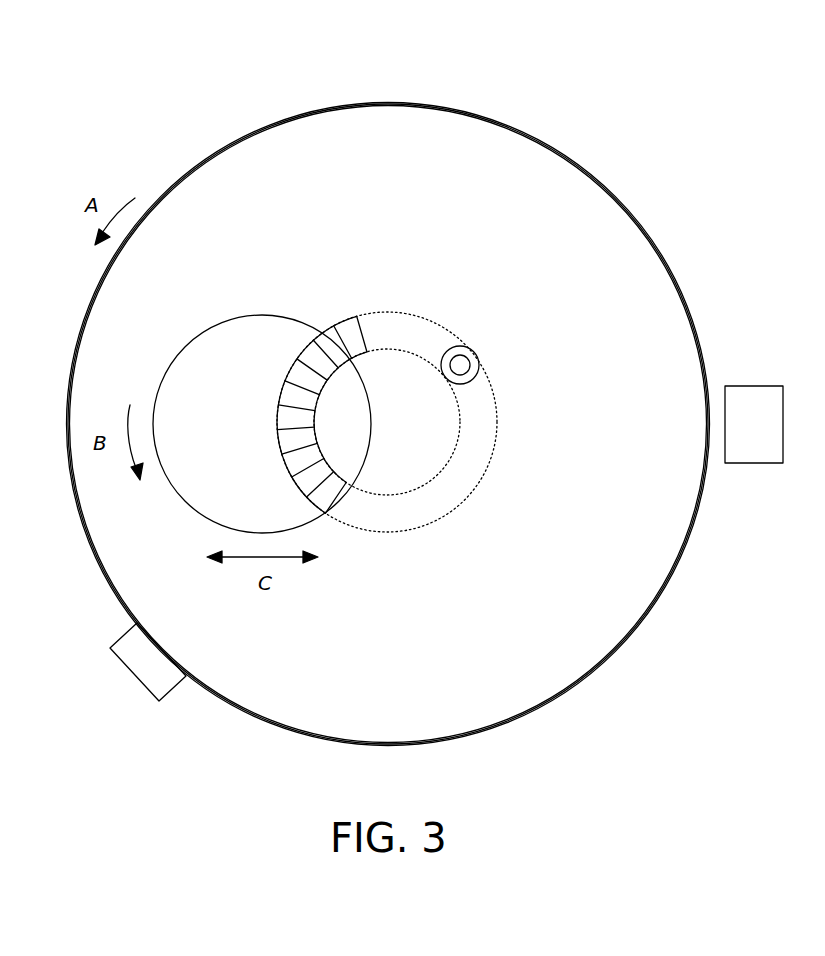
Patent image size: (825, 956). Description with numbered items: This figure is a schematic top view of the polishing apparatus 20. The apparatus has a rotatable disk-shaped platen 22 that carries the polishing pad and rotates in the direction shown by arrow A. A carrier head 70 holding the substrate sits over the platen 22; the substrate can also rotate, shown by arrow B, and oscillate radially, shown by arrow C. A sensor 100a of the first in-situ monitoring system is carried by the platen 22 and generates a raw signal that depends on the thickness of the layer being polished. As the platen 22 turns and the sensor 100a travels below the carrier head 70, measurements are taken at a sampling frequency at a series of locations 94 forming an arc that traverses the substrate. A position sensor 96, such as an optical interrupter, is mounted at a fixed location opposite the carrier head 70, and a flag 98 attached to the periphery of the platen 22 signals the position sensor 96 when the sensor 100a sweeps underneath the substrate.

The polishing apparatus 20 is at (192, 65).
The platen 22 is at (603, 187).
The carrier head 70 is at (190, 342).
The locations 94 is at (357, 316).
The sensor 100a is at (460, 365).
The flag 98 is at (757, 386).
The position sensor 96 is at (133, 676).